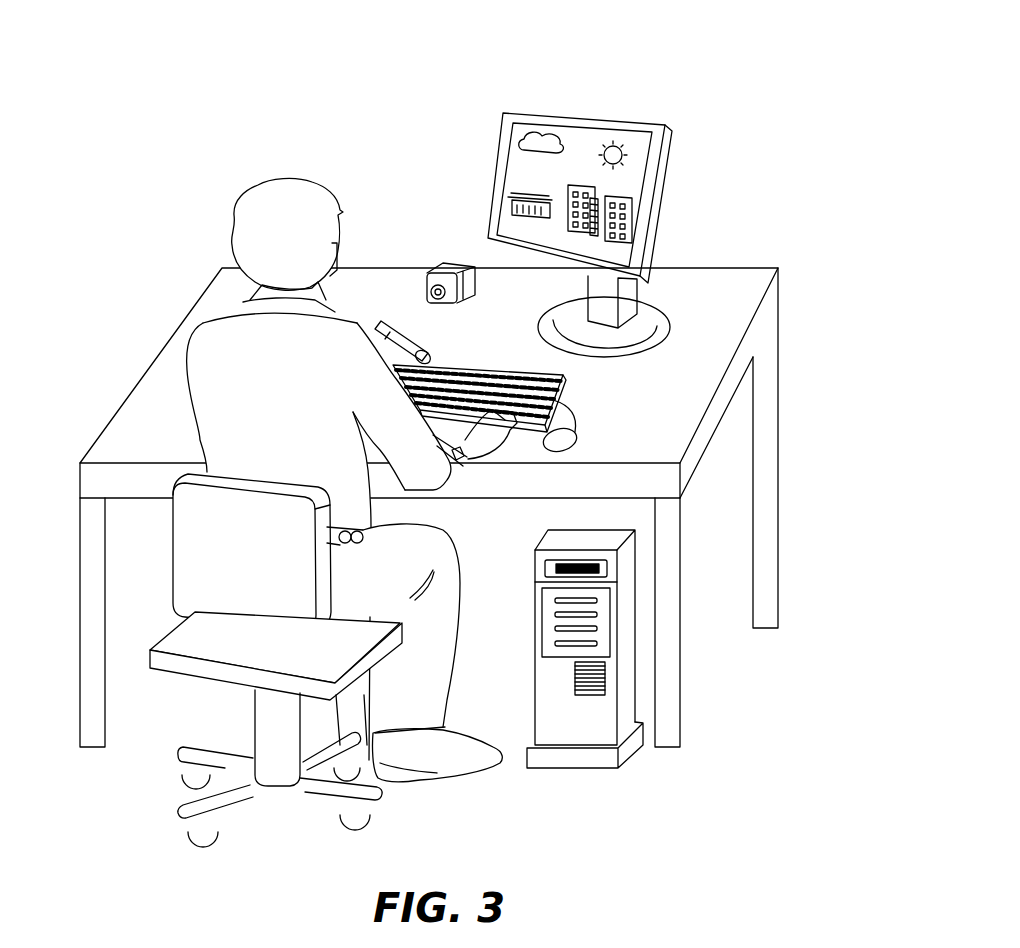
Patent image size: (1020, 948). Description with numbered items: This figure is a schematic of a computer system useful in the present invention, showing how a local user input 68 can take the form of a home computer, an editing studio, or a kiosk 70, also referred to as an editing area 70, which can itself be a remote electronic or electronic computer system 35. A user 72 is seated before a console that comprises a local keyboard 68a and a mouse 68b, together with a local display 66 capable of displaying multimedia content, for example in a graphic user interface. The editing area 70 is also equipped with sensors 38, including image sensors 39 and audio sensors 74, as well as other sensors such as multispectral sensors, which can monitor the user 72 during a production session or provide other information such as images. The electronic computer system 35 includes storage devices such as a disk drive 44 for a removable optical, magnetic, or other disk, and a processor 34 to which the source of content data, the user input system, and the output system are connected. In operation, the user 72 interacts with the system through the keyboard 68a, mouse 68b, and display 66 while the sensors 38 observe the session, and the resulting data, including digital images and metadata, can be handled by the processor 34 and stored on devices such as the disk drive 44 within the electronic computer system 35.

The kiosk 70 is at (735, 52).
The local display 66 is at (610, 122).
The local user input 68 is at (710, 228).
The local keyboard 68a is at (583, 374).
The mouse 68b is at (598, 433).
The sensors 38 is at (424, 255).
The image sensors 39 is at (450, 215).
The user 72 is at (213, 318).
The audio sensors 74 is at (383, 325).
The disk drive 44 is at (545, 568).
The processor 34 is at (565, 670).
The electronic computer system 35 is at (652, 787).